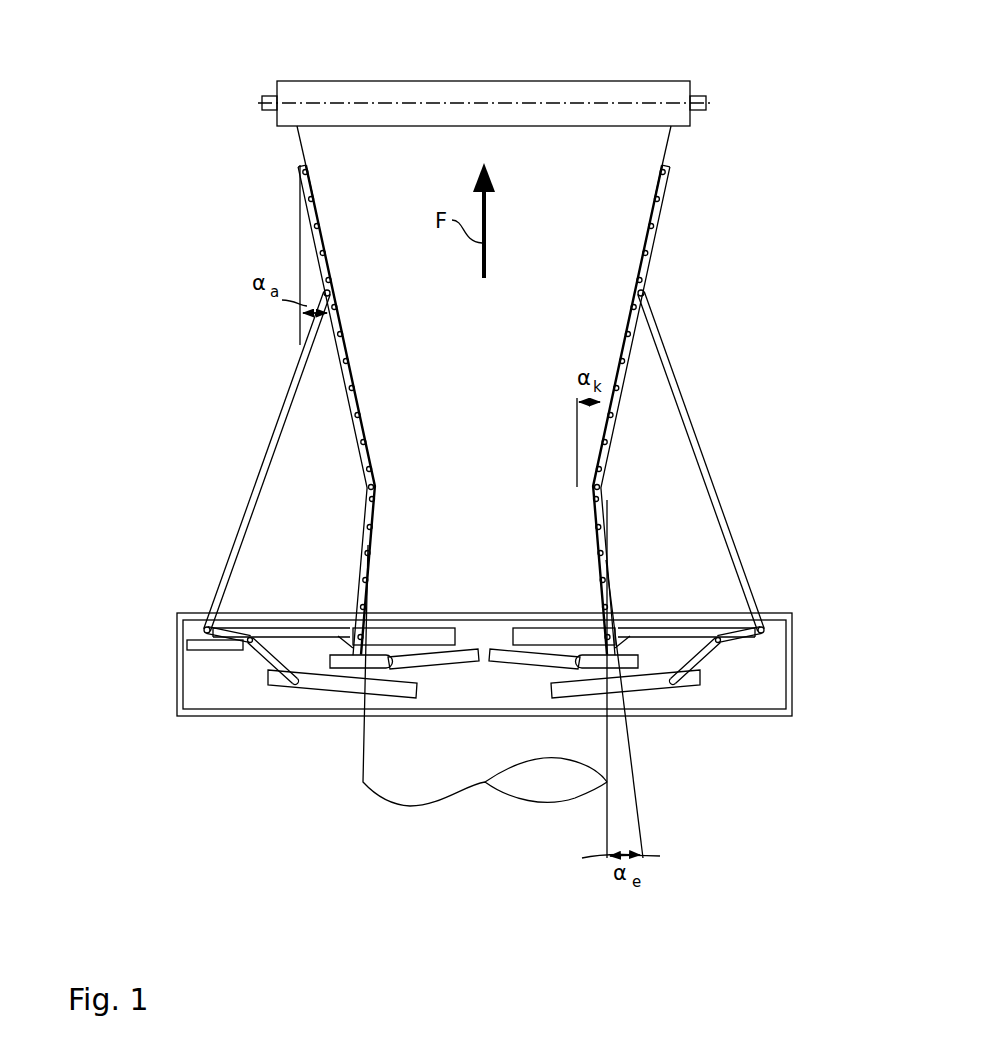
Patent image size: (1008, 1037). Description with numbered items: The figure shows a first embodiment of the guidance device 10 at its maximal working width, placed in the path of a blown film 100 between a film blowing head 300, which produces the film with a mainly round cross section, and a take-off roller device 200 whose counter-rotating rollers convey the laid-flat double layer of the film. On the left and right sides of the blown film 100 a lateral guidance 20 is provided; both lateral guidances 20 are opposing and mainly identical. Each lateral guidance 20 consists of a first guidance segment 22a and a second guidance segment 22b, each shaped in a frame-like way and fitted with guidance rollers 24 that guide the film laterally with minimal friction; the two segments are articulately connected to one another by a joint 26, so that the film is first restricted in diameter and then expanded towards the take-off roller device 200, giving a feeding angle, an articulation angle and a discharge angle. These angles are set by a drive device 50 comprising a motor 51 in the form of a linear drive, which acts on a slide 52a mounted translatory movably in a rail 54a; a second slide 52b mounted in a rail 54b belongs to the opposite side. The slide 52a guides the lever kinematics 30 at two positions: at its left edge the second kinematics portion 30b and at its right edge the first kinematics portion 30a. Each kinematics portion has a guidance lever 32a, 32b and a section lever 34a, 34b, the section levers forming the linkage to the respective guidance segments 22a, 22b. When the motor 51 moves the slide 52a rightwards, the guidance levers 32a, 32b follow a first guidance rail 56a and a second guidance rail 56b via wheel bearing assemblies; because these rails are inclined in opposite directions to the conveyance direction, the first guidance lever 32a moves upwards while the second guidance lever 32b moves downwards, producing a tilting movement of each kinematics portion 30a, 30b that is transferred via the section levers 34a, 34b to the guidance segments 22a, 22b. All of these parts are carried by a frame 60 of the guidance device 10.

The guidance device 10 is at (178, 362).
The take-off roller device 200 is at (341, 78).
The lateral guidance 20 is at (295, 247).
The first guidance segment 22a is at (598, 545).
The second guidance segment 22b is at (615, 362).
The guidance roller 24 is at (332, 280).
The joint 26 is at (594, 487).
The lever kinematics 30 is at (212, 543).
The first kinematics portion 30a is at (322, 620).
The second kinematics portion 30b is at (260, 493).
The first guidance lever 32a is at (353, 653).
The second guidance lever 32b is at (267, 655).
The first section lever 34a is at (338, 637).
The second section lever 34b is at (264, 471).
The drive device 50 is at (172, 634).
The motor 51 is at (192, 645).
The slide 52a is at (302, 636).
The slide 52b is at (680, 633).
The rail 54a is at (417, 633).
The rail 54b is at (535, 633).
The first guidance rail 56a is at (546, 660).
The second guidance rail 56b is at (330, 687).
The frame 60 is at (793, 664).
The blown film 100 is at (410, 777).
The film blowing head 300 is at (440, 860).